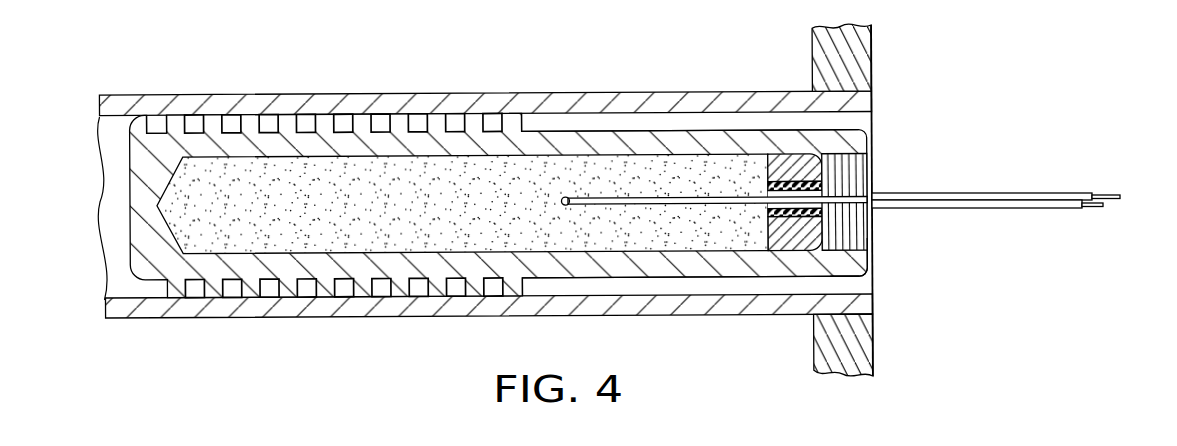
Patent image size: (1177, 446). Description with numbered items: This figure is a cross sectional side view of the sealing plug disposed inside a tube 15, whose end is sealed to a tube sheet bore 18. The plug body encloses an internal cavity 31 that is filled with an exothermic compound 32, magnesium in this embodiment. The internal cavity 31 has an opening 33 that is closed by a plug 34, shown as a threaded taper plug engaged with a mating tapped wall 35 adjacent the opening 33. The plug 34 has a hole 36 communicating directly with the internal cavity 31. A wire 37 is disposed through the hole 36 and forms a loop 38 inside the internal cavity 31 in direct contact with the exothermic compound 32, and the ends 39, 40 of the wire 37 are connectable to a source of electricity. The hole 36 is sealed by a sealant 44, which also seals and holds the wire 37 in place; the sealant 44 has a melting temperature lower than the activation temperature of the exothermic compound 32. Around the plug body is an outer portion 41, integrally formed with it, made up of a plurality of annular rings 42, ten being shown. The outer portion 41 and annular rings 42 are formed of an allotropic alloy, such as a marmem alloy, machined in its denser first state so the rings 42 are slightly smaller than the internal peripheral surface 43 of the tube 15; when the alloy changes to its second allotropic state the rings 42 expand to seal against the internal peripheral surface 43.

The tube 15 is at (392, 303).
The tube sheet bore 18 is at (868, 98).
The internal cavity 31 is at (473, 197).
The exothermic compound 32 is at (212, 207).
The opening 33 is at (888, 232).
The plug 34 is at (857, 180).
The tapped wall 35 is at (870, 245).
The hole 36 is at (765, 215).
The wire 37 is at (1014, 205).
The loop 38 is at (568, 196).
The wire end 39 is at (1107, 194).
The wire end 40 is at (1098, 206).
The outer portion 41 is at (160, 127).
The annular rings 42 is at (256, 121).
The internal peripheral surface 43 is at (858, 119).
The sealant 44 is at (820, 217).